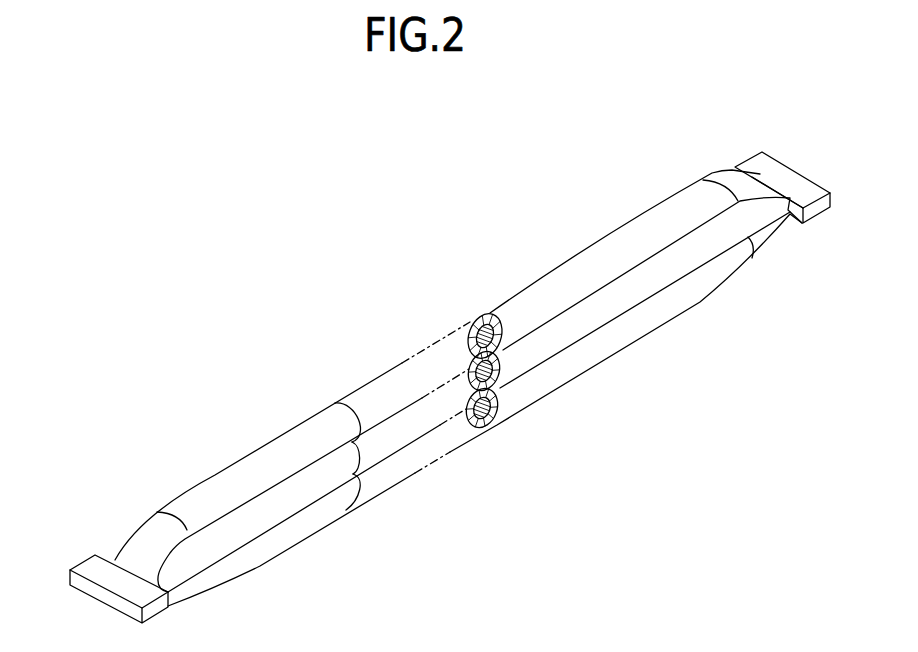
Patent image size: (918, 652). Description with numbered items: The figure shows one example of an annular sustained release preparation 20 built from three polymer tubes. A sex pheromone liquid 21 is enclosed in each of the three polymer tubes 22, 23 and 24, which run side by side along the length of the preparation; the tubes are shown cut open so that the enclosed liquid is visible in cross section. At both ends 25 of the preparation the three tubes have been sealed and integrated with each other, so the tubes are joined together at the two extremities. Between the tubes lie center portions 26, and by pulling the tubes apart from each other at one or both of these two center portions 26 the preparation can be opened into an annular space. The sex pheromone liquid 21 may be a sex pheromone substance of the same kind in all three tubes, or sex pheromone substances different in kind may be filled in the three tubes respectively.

The sustained release preparation 20 is at (578, 455).
The sex pheromone liquid 21 is at (481, 318).
The polymer tube 22 is at (207, 490).
The polymer tube 23 is at (294, 488).
The polymer tube 24 is at (310, 520).
The ends 25 is at (760, 152).
The center portions 26 is at (645, 262).